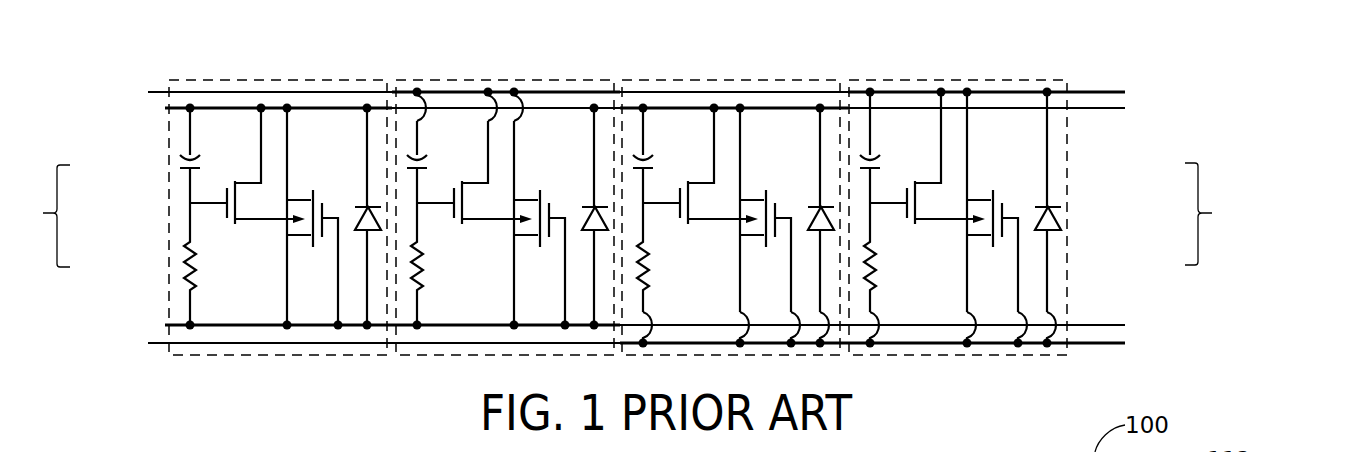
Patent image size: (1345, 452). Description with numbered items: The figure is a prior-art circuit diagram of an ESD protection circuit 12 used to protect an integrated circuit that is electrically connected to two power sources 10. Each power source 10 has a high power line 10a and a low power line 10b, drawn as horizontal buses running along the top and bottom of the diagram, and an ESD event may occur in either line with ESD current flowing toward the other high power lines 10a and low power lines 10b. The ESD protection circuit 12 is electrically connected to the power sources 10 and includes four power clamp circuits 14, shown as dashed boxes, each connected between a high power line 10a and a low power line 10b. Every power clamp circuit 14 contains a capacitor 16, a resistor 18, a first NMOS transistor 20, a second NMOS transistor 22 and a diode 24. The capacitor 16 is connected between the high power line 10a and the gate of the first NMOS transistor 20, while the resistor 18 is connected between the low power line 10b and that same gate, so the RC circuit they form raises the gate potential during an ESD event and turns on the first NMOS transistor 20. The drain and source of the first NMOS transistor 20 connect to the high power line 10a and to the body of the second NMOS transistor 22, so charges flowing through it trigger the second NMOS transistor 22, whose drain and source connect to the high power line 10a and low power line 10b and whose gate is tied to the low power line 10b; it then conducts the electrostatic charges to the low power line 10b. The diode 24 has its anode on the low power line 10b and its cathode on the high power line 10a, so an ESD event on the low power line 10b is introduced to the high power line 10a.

The power source 10 is at (626, 215).
The high power line 10a is at (163, 93).
The low power line 10b is at (163, 343).
The ESD protection circuit 12 is at (1086, 46).
The power clamp circuit 14 is at (307, 356).
The capacitor 16 is at (207, 163).
The resistor 18 is at (203, 262).
The first NMOS transistor 20 is at (232, 227).
The second NMOS transistor 22 is at (313, 190).
The diode 24 is at (356, 209).